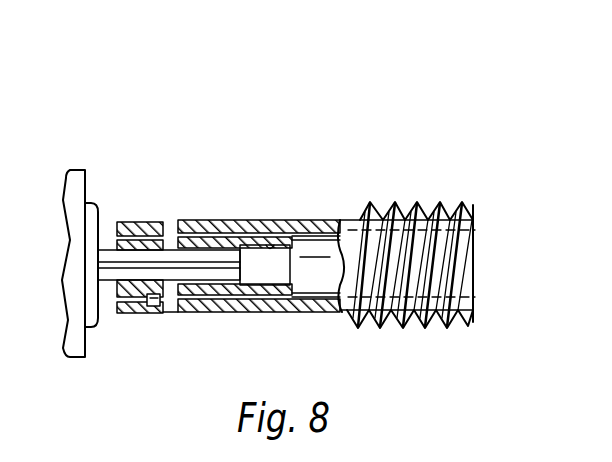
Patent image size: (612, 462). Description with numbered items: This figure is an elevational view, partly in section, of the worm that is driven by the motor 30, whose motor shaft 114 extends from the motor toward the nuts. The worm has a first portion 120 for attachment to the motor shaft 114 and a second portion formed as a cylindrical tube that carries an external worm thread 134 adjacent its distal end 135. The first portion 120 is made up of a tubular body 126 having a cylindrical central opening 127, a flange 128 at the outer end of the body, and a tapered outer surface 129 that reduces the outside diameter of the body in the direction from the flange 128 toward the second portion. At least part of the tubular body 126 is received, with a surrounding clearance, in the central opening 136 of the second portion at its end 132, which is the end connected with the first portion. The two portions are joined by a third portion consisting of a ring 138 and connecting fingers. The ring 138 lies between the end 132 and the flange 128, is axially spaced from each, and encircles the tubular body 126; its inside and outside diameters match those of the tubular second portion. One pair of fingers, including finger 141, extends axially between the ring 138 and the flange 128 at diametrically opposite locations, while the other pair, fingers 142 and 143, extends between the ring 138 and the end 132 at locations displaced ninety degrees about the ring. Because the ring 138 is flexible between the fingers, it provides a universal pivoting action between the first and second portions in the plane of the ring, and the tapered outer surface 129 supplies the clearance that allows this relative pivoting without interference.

The motor 30 is at (76, 172).
The first portion 120 is at (154, 194).
The connecting finger 142 is at (138, 221).
The ring 138 is at (168, 247).
The tubular body 126 is at (197, 247).
The motor shaft 114 is at (234, 250).
The cylindrical central opening 127 is at (286, 305).
The external worm thread 134 is at (373, 220).
The central opening 136 is at (470, 235).
The distal end 135 is at (468, 300).
The flange 128 is at (122, 315).
The connecting finger 141 is at (140, 313).
The connecting finger 143 is at (152, 320).
The end of second portion 132 is at (172, 312).
The tapered outer surface 129 is at (285, 300).